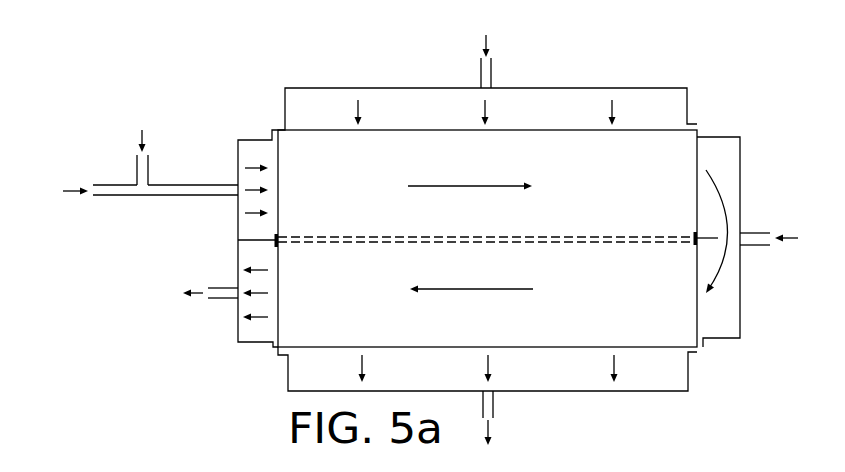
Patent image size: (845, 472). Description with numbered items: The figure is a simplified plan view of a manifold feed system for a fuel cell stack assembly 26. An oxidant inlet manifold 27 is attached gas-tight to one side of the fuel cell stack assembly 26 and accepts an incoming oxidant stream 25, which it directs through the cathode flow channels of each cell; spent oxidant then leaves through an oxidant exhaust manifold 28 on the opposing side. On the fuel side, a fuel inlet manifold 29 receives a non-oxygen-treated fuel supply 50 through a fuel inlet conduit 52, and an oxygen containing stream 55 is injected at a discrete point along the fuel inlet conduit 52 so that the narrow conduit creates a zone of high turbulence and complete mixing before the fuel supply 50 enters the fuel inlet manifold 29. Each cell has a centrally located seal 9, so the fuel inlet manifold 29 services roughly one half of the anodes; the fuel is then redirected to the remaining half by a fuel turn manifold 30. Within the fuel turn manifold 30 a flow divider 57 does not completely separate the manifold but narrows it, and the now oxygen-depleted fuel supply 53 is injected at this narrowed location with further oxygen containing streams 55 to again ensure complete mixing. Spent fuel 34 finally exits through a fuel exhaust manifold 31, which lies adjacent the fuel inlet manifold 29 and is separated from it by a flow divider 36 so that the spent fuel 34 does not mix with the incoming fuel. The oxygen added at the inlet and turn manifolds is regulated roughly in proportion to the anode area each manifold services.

The centrally located seal 9 is at (637, 245).
The oxidant stream 25 is at (487, 43).
The fuel cell stack assembly 26 is at (646, 173).
The oxidant inlet manifold 27 is at (651, 98).
The oxidant exhaust manifold 28 is at (640, 377).
The fuel inlet manifold 29 is at (249, 149).
The fuel turn manifold 30 is at (718, 137).
The fuel exhaust manifold 31 is at (259, 331).
The spent fuel 34 is at (197, 294).
The flow divider 36 is at (262, 240).
The fuel supply 50 is at (72, 192).
The fuel inlet conduit 52 is at (190, 197).
The oxygen-depleted fuel supply 53 is at (720, 182).
The oxygen containing stream 55 is at (143, 131).
The flow divider 57 is at (710, 236).